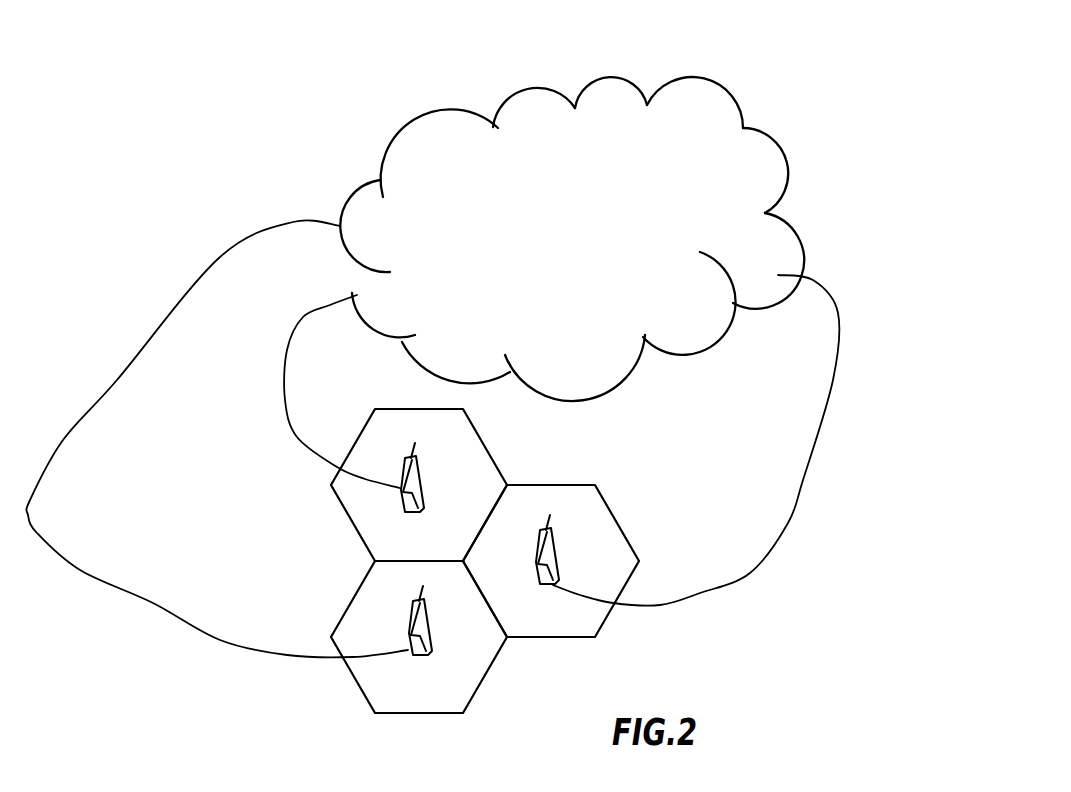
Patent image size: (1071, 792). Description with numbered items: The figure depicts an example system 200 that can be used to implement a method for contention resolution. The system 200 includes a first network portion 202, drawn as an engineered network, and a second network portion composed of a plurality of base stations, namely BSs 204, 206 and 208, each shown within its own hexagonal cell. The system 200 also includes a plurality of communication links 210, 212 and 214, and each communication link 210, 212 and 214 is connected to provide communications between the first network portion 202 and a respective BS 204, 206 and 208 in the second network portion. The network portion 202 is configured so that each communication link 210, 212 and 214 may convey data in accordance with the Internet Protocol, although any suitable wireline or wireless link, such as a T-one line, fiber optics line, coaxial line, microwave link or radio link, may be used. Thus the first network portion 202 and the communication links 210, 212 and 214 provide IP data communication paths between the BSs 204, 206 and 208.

The system 200 is at (816, 82).
The first network portion 202 is at (778, 260).
The base station 204 is at (420, 466).
The base station 206 is at (410, 625).
The base station 208 is at (557, 550).
The communication link 210 is at (303, 318).
The communication link 212 is at (117, 380).
The communication link 214 is at (790, 522).